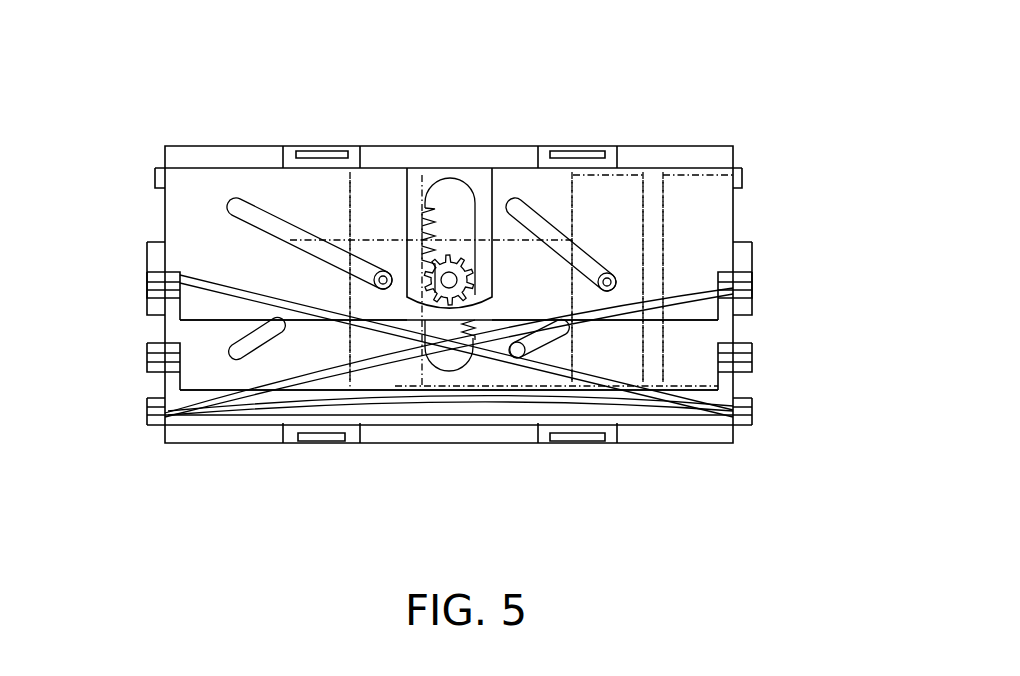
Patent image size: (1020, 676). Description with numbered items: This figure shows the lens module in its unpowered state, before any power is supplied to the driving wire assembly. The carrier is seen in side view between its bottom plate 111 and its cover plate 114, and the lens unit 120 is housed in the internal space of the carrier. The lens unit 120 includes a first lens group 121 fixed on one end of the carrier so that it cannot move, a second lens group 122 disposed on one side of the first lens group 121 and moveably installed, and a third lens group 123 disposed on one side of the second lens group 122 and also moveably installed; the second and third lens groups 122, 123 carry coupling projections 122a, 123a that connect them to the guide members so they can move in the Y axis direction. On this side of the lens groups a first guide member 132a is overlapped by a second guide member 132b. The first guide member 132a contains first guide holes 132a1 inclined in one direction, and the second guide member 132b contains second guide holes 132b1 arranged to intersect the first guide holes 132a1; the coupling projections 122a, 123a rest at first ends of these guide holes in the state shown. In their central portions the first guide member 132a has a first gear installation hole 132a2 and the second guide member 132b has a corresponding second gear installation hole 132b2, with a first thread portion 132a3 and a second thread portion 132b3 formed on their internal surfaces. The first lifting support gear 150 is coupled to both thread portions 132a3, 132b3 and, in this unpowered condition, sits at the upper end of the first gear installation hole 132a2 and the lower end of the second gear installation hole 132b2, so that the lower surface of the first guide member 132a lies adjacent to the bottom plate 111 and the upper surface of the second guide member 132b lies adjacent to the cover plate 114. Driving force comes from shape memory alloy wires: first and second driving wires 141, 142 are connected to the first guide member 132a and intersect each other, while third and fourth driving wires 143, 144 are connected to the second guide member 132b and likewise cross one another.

The bottom plate 111 is at (715, 435).
The cover plate 114 is at (717, 158).
The lens unit 120 is at (836, 3).
The first lens group 121 is at (683, 168).
The second lens group 122 is at (612, 168).
The third lens group 123 is at (375, 165).
The coupling projection 122a is at (615, 283).
The coupling projection 123a is at (380, 283).
The first guide member 132a is at (188, 333).
The first guide holes 132a1 is at (258, 366).
The first gear installation hole 132a2 is at (420, 352).
The first thread portion 132a3 is at (475, 330).
The second guide member 132b is at (190, 230).
The second guide holes 132b1 is at (266, 215).
The second gear installation hole 132b2 is at (448, 195).
The second thread portion 132b3 is at (425, 210).
The first driving wire 141 is at (253, 414).
The second driving wire 142 is at (590, 388).
The third driving wire 143 is at (283, 387).
The fourth driving wire 144 is at (355, 366).
The first lifting support gear 150 is at (458, 252).